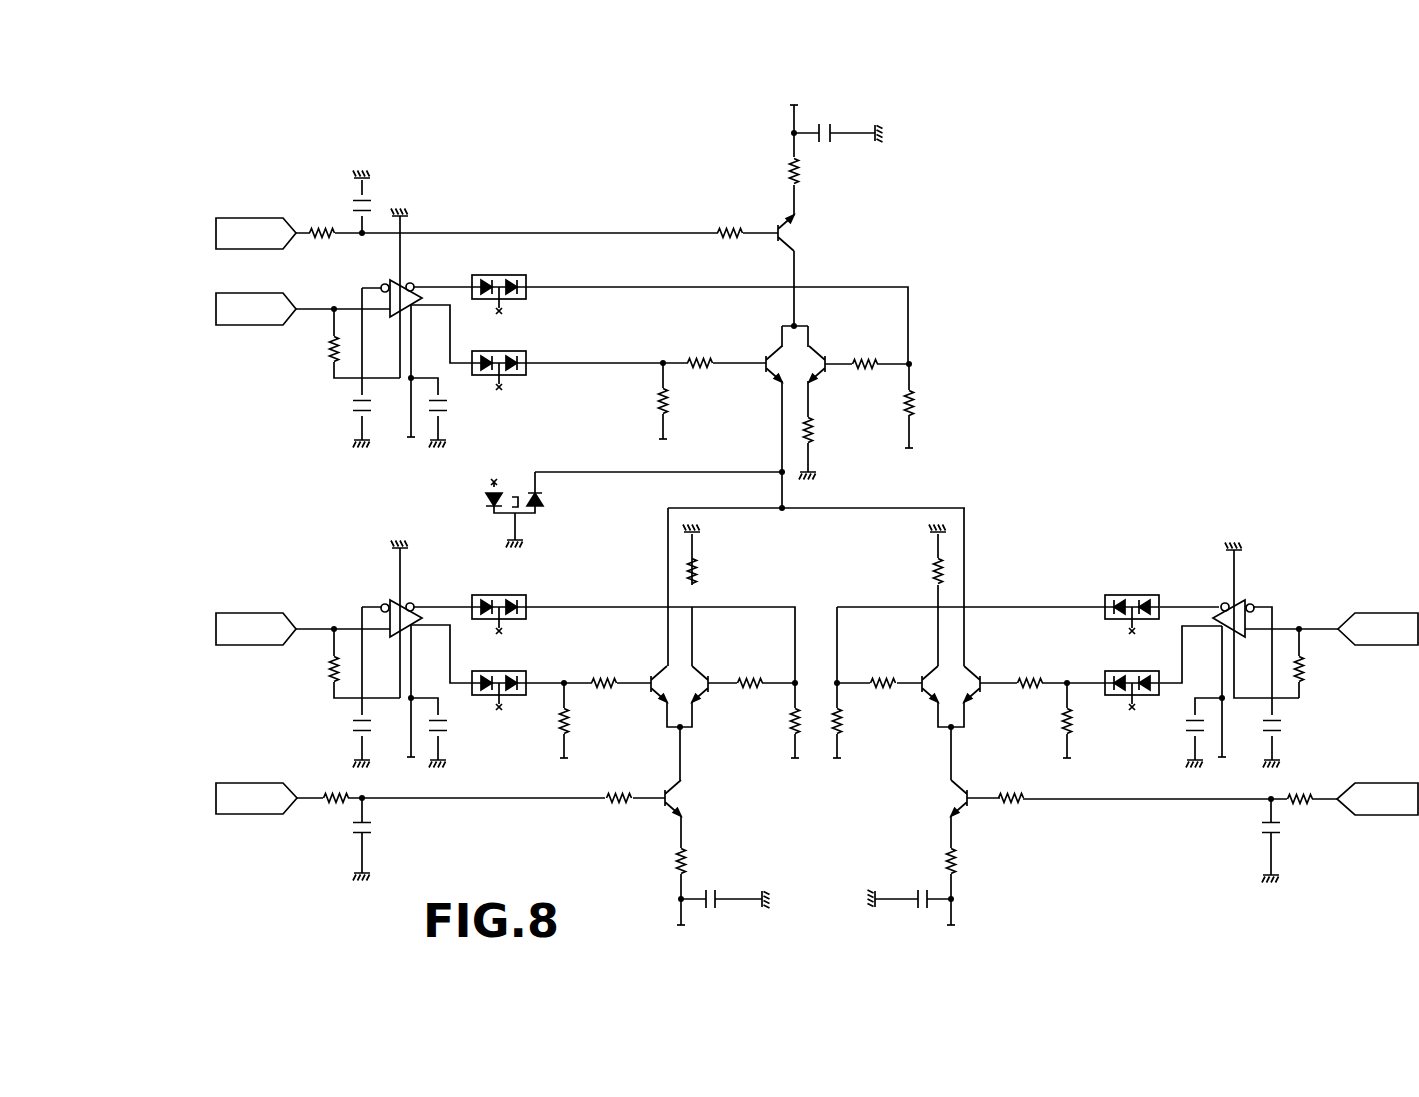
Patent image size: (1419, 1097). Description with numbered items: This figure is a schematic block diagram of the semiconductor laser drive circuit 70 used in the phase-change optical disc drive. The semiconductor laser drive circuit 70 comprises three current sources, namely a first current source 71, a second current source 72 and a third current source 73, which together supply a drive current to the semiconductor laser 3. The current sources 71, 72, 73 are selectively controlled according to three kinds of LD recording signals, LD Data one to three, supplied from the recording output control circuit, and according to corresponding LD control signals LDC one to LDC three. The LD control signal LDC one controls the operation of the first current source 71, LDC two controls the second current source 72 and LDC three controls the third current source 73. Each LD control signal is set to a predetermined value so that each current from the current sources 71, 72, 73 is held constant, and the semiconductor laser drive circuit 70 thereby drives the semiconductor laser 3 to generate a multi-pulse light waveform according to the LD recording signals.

The semiconductor laser drive circuit 70 is at (804, 520).
The first current source 71 is at (930, 292).
The second current source 72 is at (726, 840).
The third current source 73 is at (1066, 570).
The semiconductor laser 3 is at (540, 502).